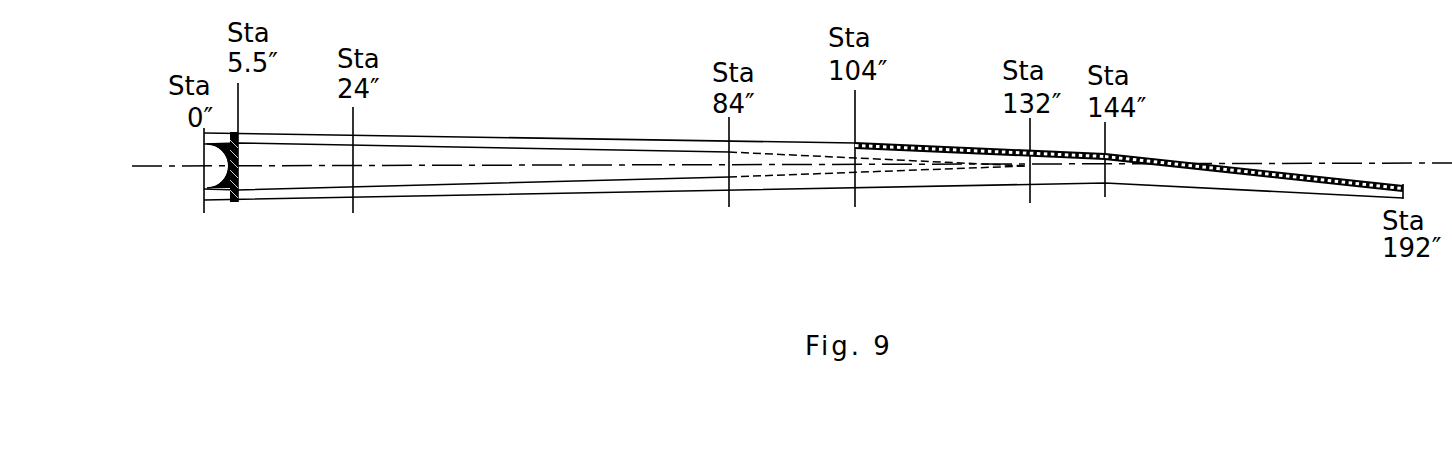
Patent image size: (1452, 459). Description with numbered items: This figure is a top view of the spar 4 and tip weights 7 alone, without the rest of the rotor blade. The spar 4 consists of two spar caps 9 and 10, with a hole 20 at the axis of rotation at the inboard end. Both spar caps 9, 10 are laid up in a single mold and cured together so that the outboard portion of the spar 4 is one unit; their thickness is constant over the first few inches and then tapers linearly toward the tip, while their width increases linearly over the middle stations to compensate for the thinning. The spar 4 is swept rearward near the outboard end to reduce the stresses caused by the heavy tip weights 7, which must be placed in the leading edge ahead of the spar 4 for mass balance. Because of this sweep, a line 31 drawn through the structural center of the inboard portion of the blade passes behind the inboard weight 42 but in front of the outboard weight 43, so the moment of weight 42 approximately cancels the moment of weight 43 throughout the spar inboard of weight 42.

The spar 4 is at (435, 123).
The tip weights 7 is at (1162, 160).
The spar cap 9 is at (513, 188).
The spar cap 10 is at (462, 144).
The hole 20 is at (207, 183).
The line 31 is at (1272, 162).
The inboard weight 42 is at (857, 142).
The outboard weight 43 is at (1403, 187).